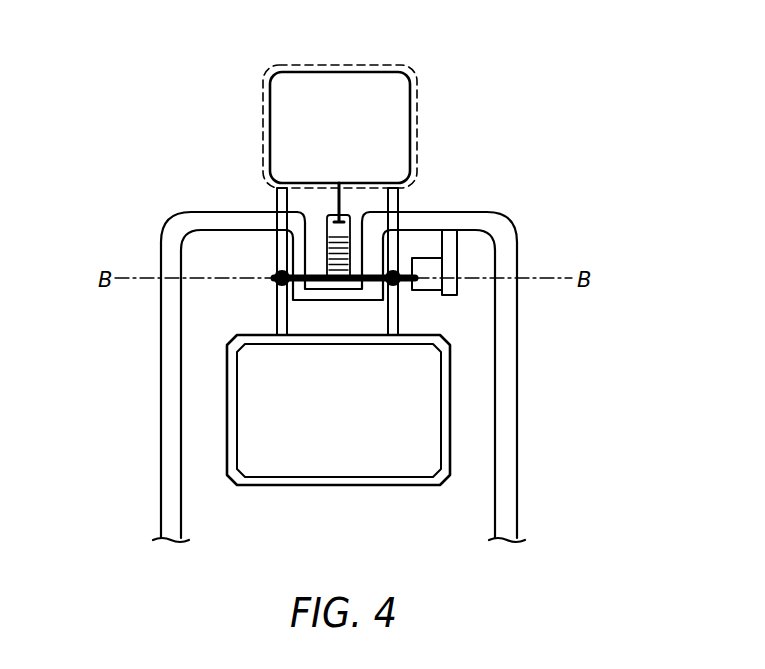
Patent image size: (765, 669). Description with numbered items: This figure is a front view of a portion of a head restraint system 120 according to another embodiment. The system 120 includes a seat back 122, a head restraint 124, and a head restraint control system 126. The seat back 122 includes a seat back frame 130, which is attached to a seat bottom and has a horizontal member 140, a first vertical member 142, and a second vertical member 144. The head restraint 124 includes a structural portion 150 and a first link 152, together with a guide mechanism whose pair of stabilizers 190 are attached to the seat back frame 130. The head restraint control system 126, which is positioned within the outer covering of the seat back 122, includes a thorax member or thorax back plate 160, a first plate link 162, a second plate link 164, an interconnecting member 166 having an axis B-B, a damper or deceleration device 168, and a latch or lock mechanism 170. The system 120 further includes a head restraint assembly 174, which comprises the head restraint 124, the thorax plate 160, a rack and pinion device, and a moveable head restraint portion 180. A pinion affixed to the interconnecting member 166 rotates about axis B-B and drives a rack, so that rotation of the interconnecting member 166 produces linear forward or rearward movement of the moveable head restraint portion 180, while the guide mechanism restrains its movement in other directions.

The head restraint system 120 is at (167, 343).
The seat back 122 is at (511, 361).
The head restraint 124 is at (380, 97).
The head restraint control system 126 is at (400, 447).
The seat back frame 130 is at (497, 233).
The horizontal member 140 is at (235, 222).
The first vertical member 142 is at (520, 413).
The second vertical member 144 is at (161, 415).
The structural portion 150 is at (300, 65).
The first link 152 is at (345, 203).
The thorax member 160 is at (405, 487).
The first plate link 162 is at (398, 312).
The second plate link 164 is at (277, 310).
The interconnecting member 166 is at (367, 290).
The deceleration device 168 is at (428, 265).
The lock mechanism 170 is at (327, 494).
The head restraint assembly 174 is at (340, 457).
The moveable head restraint portion 180 is at (372, 148).
The stabilizers 190 is at (277, 200).